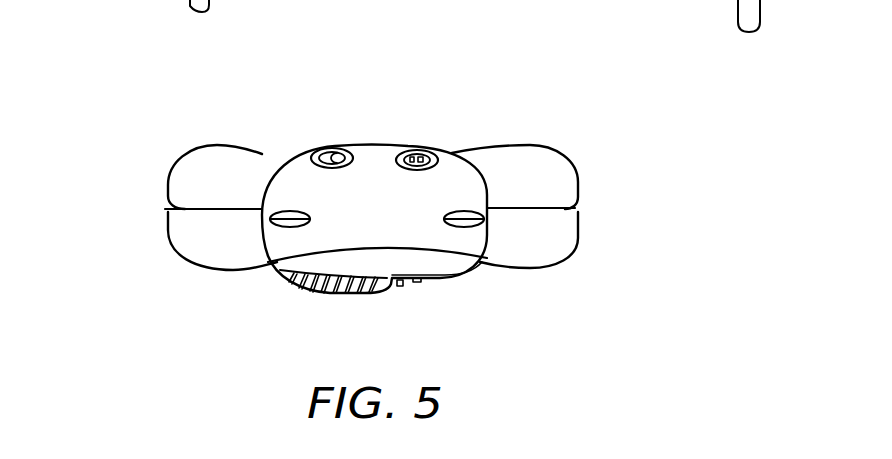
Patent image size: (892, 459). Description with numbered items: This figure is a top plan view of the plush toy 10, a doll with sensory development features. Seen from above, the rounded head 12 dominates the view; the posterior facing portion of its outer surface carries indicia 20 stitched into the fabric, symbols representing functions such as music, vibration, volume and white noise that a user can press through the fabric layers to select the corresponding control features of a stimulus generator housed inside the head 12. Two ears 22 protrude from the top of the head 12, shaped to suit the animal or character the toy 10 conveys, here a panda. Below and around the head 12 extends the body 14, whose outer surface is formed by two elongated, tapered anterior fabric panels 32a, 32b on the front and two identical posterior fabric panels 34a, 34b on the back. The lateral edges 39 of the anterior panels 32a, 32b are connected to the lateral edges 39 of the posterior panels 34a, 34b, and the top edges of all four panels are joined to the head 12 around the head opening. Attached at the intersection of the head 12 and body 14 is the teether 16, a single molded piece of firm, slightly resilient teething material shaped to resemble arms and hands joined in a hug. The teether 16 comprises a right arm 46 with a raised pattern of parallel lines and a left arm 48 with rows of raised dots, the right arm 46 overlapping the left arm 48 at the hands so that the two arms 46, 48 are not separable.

The plush toy 10 is at (558, 127).
The head 12 is at (366, 147).
The body 14 is at (527, 272).
The teether 16 is at (420, 281).
The indicia 20 is at (332, 153).
The ears 22 is at (285, 216).
The anterior fabric panel 32a is at (208, 254).
The anterior fabric panel 32b is at (543, 243).
The posterior fabric panel 34a is at (210, 183).
The posterior fabric panel 34b is at (557, 175).
The lateral edges 39 is at (165, 209).
The right arm 46 is at (332, 293).
The left arm 48 is at (407, 286).